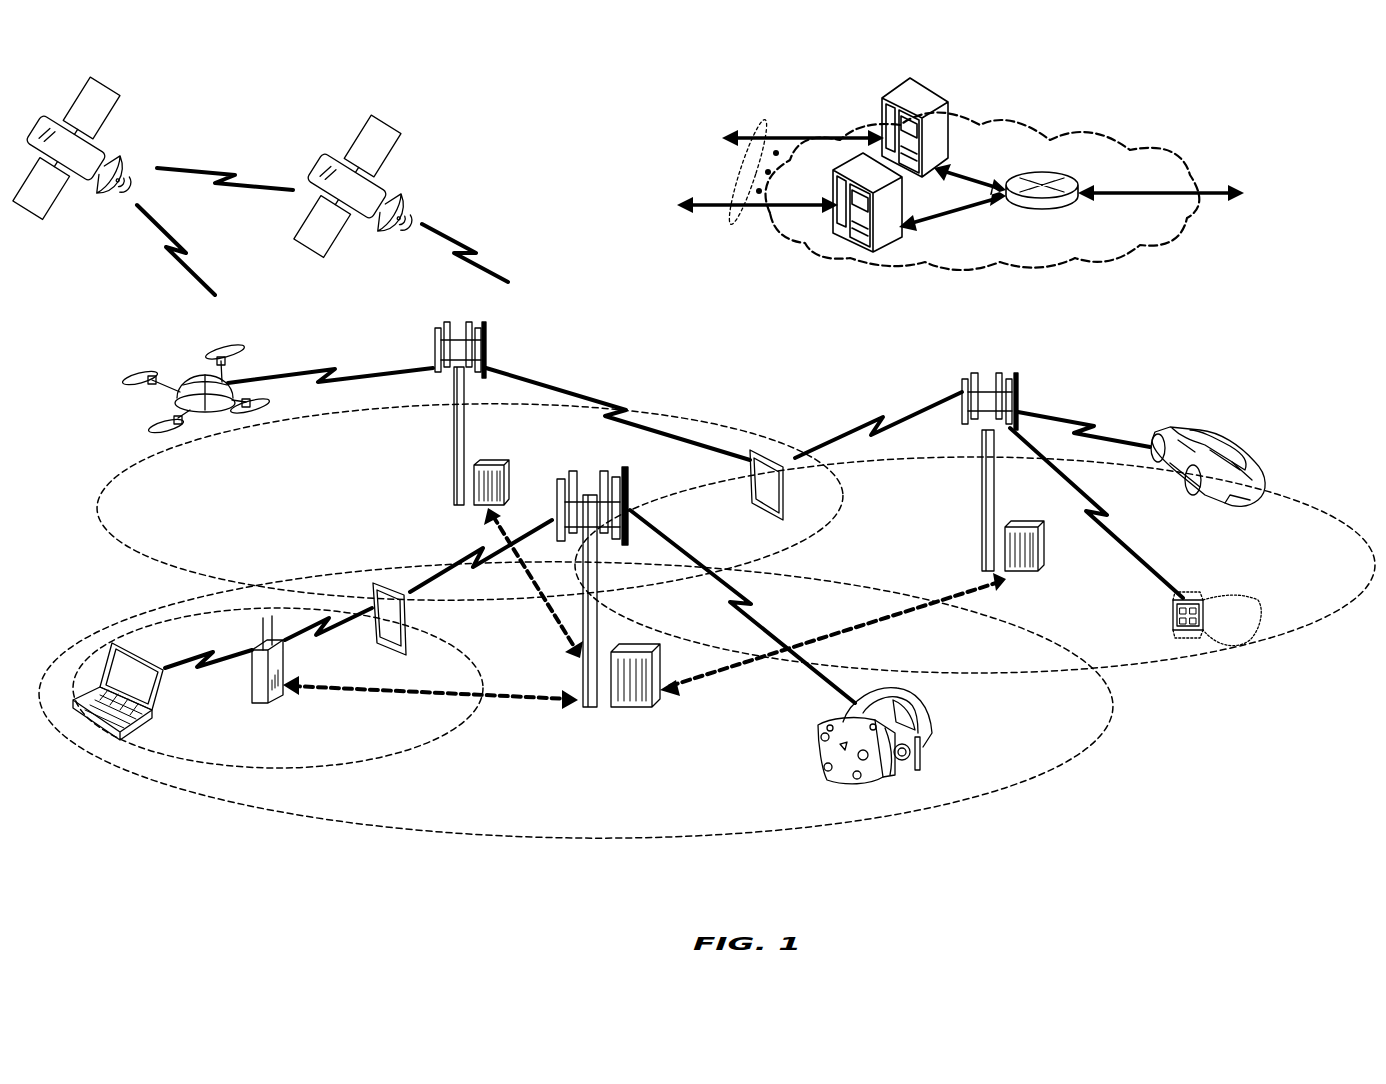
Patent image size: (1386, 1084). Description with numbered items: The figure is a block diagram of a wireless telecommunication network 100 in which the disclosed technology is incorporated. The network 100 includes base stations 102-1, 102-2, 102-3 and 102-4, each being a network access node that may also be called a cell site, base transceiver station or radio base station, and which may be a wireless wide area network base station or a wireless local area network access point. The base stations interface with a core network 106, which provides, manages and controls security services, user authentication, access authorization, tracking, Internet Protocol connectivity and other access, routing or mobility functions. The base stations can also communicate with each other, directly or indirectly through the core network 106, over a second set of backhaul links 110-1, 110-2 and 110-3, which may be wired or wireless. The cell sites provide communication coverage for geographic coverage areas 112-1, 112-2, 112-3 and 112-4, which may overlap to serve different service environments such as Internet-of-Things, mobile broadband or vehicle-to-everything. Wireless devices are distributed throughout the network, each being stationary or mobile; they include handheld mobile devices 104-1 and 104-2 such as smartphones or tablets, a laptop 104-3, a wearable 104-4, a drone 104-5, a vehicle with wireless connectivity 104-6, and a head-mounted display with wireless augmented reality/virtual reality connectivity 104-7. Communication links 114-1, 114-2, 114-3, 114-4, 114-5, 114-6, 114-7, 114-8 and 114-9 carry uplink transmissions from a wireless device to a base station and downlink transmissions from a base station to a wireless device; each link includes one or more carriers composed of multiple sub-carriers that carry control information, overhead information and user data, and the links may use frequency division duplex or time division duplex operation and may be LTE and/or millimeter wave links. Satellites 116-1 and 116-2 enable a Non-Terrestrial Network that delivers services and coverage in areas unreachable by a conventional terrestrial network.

The wireless telecommunication network 100 is at (1314, 114).
The base station 102-1 is at (589, 707).
The base station 102-2 is at (453, 452).
The base station 102-3 is at (980, 493).
The base station 102-4 is at (252, 693).
The handheld mobile device 104-1 is at (412, 632).
The handheld mobile device 104-2 is at (750, 487).
The laptop 104-3 is at (96, 737).
The wearable 104-4 is at (1193, 590).
The drone 104-5 is at (212, 417).
The vehicle with wireless connectivity 104-6 is at (1230, 438).
The head-mounted display 104-7 is at (933, 725).
The core network 106 is at (1075, 258).
The backhaul link 110-1 is at (323, 688).
The backhaul link 110-2 is at (902, 615).
The backhaul link 110-3 is at (547, 617).
The geographic coverage area 112-1 is at (516, 838).
The geographic coverage area 112-2 is at (388, 748).
The geographic coverage area 112-3 is at (158, 560).
The geographic coverage area 112-4 is at (1268, 487).
The communication link 114-1 is at (757, 615).
The communication link 114-2 is at (473, 563).
The communication link 114-3 is at (177, 655).
The communication link 114-4 is at (330, 635).
The communication link 114-5 is at (332, 373).
The communication link 114-6 is at (620, 407).
The communication link 114-7 is at (873, 428).
The communication link 114-8 is at (1110, 530).
The communication link 114-9 is at (1080, 433).
The satellite 116-1 is at (122, 157).
The satellite 116-2 is at (396, 197).